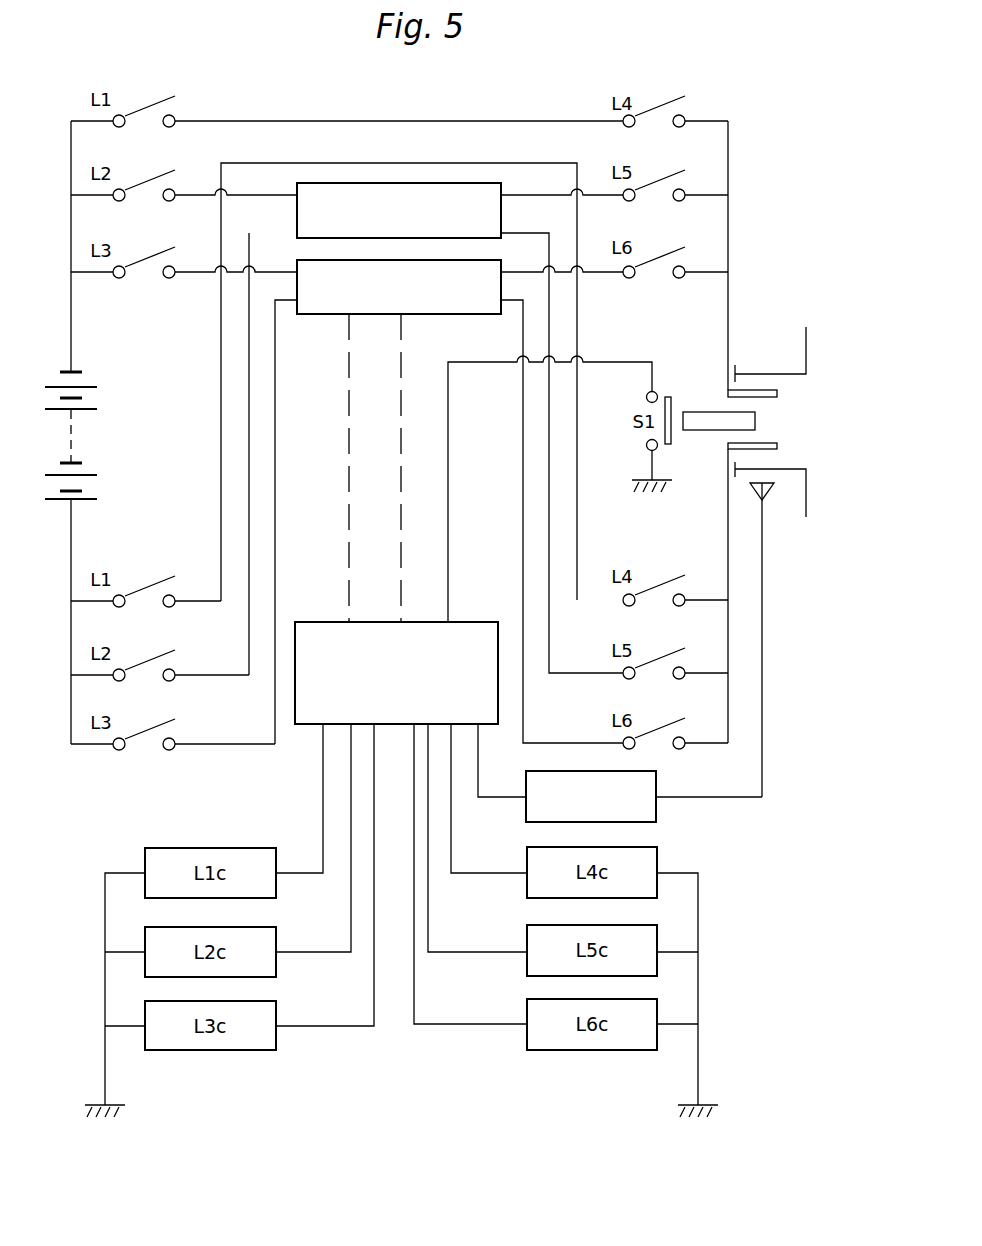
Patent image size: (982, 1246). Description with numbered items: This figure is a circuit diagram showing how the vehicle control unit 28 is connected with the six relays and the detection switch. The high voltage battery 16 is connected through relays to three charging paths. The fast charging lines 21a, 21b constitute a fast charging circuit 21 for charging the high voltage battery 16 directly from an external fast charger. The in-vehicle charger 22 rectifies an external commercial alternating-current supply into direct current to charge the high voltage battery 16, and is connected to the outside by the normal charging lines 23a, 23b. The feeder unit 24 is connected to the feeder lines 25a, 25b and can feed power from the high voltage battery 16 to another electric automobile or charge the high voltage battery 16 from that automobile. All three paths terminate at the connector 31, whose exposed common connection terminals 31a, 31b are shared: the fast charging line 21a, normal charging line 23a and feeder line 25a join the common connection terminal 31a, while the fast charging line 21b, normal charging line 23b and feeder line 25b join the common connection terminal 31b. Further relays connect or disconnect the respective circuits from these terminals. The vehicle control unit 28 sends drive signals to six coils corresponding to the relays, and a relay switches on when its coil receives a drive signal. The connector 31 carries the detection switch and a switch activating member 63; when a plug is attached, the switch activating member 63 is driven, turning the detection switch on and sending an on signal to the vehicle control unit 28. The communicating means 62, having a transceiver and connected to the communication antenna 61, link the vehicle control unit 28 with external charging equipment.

The high voltage battery 16 is at (84, 436).
The fast charging circuit 21 is at (399, 342).
The fast charging line 21a is at (512, 163).
The fast charging line 21b is at (512, 121).
The in-vehicle charger 22 is at (297, 190).
The normal charging line 23a is at (551, 632).
The normal charging line 23b is at (512, 195).
The feeder unit 24 is at (308, 318).
The feeder line 25a is at (526, 713).
The feeder line 25b is at (512, 272).
The vehicle control unit 28 is at (306, 618).
The connector 31 is at (806, 348).
The common connection terminal 31a is at (777, 446).
The common connection terminal 31b is at (777, 394).
The communication antenna 61 is at (774, 490).
The communicating means 62 is at (657, 812).
The switch activating member 63 is at (697, 412).